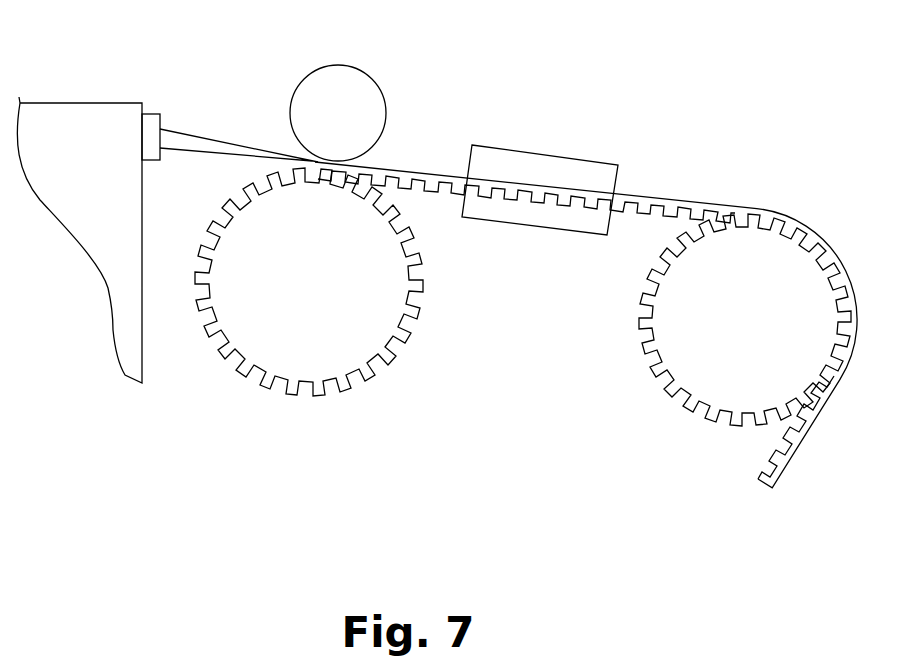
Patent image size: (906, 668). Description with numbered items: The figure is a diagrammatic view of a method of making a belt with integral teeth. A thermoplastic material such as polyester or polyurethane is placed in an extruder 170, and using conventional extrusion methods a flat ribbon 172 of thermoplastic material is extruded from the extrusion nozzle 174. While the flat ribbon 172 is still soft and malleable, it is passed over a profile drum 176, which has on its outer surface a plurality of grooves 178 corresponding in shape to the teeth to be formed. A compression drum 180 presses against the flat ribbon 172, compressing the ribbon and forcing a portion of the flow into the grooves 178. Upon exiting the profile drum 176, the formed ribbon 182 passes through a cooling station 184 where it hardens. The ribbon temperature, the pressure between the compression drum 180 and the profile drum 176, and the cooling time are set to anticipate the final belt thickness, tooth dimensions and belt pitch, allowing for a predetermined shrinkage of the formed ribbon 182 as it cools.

The extruder 170 is at (64, 164).
The flat ribbon 172 is at (199, 137).
The extrusion nozzle 174 is at (152, 113).
The profile drum 176 is at (260, 338).
The grooves 178 is at (315, 168).
The compression drum 180 is at (337, 76).
The formed ribbon 182 is at (418, 172).
The cooling station 184 is at (525, 152).